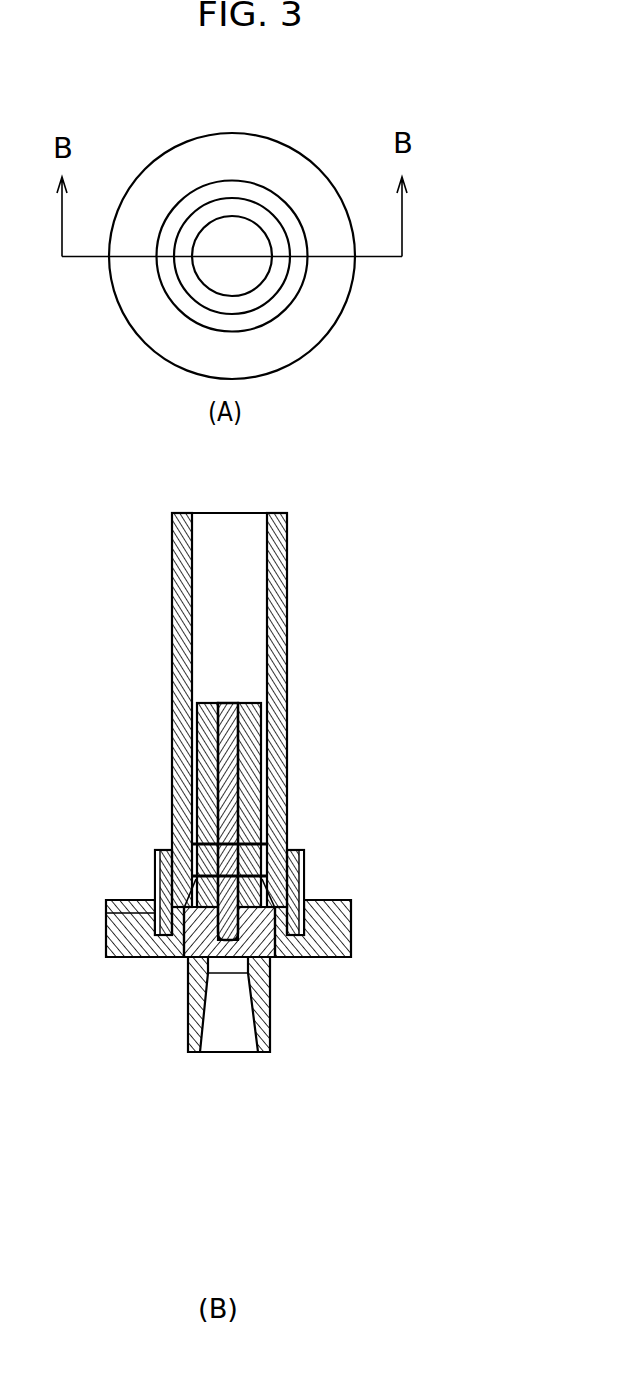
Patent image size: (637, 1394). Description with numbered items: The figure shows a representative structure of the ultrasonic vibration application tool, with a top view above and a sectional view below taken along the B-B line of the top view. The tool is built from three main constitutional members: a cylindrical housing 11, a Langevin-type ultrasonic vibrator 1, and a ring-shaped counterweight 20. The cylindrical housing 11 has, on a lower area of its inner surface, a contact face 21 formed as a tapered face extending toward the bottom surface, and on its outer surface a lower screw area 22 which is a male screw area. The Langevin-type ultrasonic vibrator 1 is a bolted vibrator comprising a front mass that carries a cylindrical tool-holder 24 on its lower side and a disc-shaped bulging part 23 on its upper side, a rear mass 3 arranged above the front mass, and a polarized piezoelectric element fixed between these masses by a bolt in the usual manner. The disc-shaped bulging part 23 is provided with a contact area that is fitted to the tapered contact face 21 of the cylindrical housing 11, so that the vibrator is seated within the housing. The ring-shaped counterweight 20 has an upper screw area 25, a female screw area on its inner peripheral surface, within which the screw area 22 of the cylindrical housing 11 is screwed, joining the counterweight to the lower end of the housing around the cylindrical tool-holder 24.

The Langevin-type ultrasonic vibrator 1 is at (285, 726).
The rear mass 3 is at (253, 780).
The cylindrical housing 11 is at (278, 663).
The ring-shaped counterweight 20 is at (351, 905).
The contact face 21 is at (304, 877).
The screw area 22 is at (155, 863).
The disc-shaped bulging part 23 is at (272, 953).
The cylindrical tool-holder 24 is at (188, 1027).
The upper screw area 25 is at (106, 913).